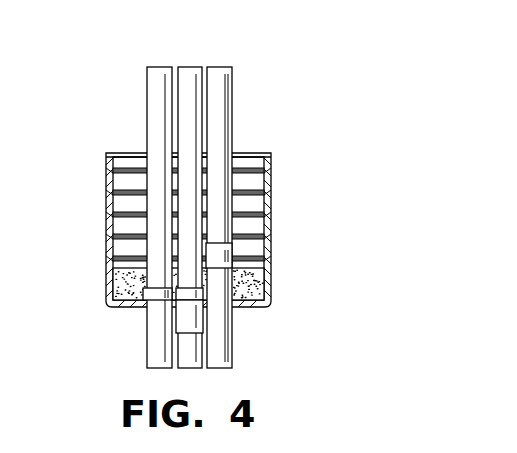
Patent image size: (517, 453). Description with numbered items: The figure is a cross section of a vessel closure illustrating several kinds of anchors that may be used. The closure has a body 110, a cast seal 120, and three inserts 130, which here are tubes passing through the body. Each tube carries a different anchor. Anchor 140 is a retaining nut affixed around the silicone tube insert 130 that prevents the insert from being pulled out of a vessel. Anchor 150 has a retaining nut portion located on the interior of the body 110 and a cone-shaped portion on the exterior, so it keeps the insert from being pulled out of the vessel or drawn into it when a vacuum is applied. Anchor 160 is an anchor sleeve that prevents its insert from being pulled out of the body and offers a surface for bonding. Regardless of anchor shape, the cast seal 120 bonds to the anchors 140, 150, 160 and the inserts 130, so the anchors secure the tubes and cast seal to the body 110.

The body 110 is at (106, 191).
The cast seal 120 is at (255, 288).
The inserts 130 is at (232, 102).
The anchor 140 is at (143, 296).
The anchor 150 is at (200, 322).
The anchor sleeve 160 is at (232, 254).